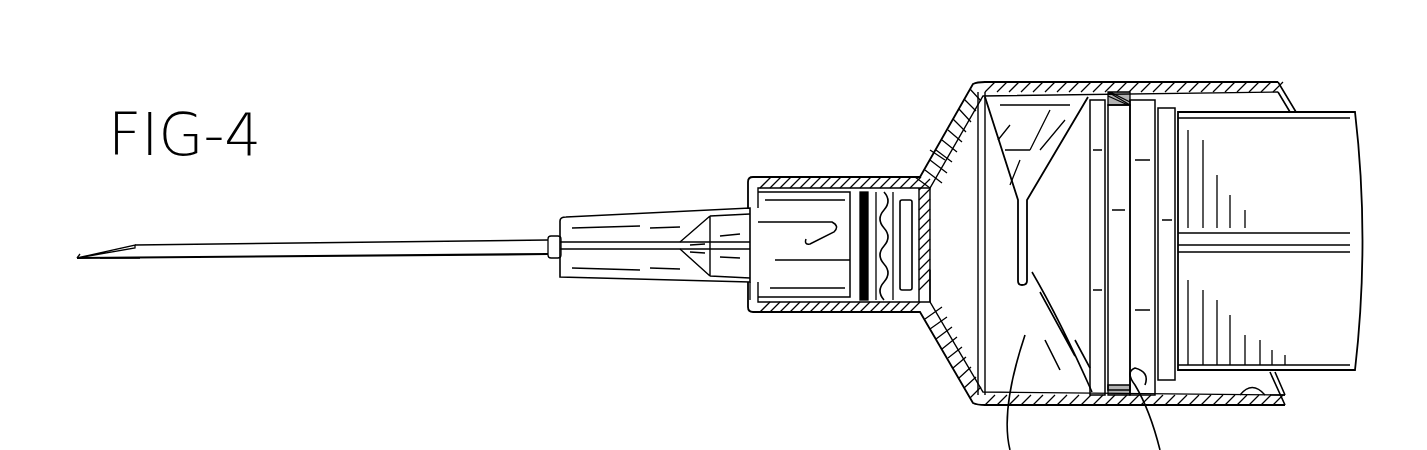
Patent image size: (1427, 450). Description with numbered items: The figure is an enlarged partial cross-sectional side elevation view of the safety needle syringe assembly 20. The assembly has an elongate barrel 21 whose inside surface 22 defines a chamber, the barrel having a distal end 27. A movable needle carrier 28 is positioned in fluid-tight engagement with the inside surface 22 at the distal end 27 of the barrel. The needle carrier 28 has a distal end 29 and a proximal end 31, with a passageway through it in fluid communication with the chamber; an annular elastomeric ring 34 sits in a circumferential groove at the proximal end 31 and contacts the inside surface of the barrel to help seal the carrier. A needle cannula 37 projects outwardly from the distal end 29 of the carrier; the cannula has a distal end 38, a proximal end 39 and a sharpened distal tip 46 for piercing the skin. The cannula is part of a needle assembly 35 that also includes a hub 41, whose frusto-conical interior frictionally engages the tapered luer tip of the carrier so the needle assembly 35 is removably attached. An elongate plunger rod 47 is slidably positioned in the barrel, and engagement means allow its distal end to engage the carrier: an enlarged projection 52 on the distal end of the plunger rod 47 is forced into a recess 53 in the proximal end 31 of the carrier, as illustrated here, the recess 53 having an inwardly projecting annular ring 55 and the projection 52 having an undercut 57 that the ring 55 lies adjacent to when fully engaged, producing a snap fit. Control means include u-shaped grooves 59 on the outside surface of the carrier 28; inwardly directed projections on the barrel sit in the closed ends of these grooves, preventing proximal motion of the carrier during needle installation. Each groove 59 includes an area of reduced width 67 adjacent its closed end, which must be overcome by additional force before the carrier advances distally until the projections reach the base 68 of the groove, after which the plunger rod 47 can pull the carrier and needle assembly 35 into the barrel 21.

The syringe assembly 20 is at (503, 133).
The elongate barrel 21 is at (1280, 82).
The inside surface 22 is at (1275, 405).
The distal end 27 is at (935, 152).
The movable needle carrier 28 is at (765, 210).
The distal end 29 is at (750, 300).
The proximal end 31 is at (906, 303).
The annular elastomeric ring 34 is at (852, 304).
The needle assembly 35 is at (573, 225).
The needle cannula 37 is at (322, 244).
The distal end 38 is at (133, 256).
The proximal end 39 is at (540, 251).
The hub 41 is at (728, 266).
The sharpened distal tip 46 is at (80, 257).
The elongate plunger rod 47 is at (1345, 357).
The enlarged projection 52 is at (1018, 198).
The recess 53 is at (930, 272).
The inwardly projecting annular ring 55 is at (925, 180).
The undercut 57 is at (1050, 362).
The u-shaped grooves 59 is at (797, 216).
The area of reduced width 67 is at (815, 258).
The base 68 is at (878, 300).